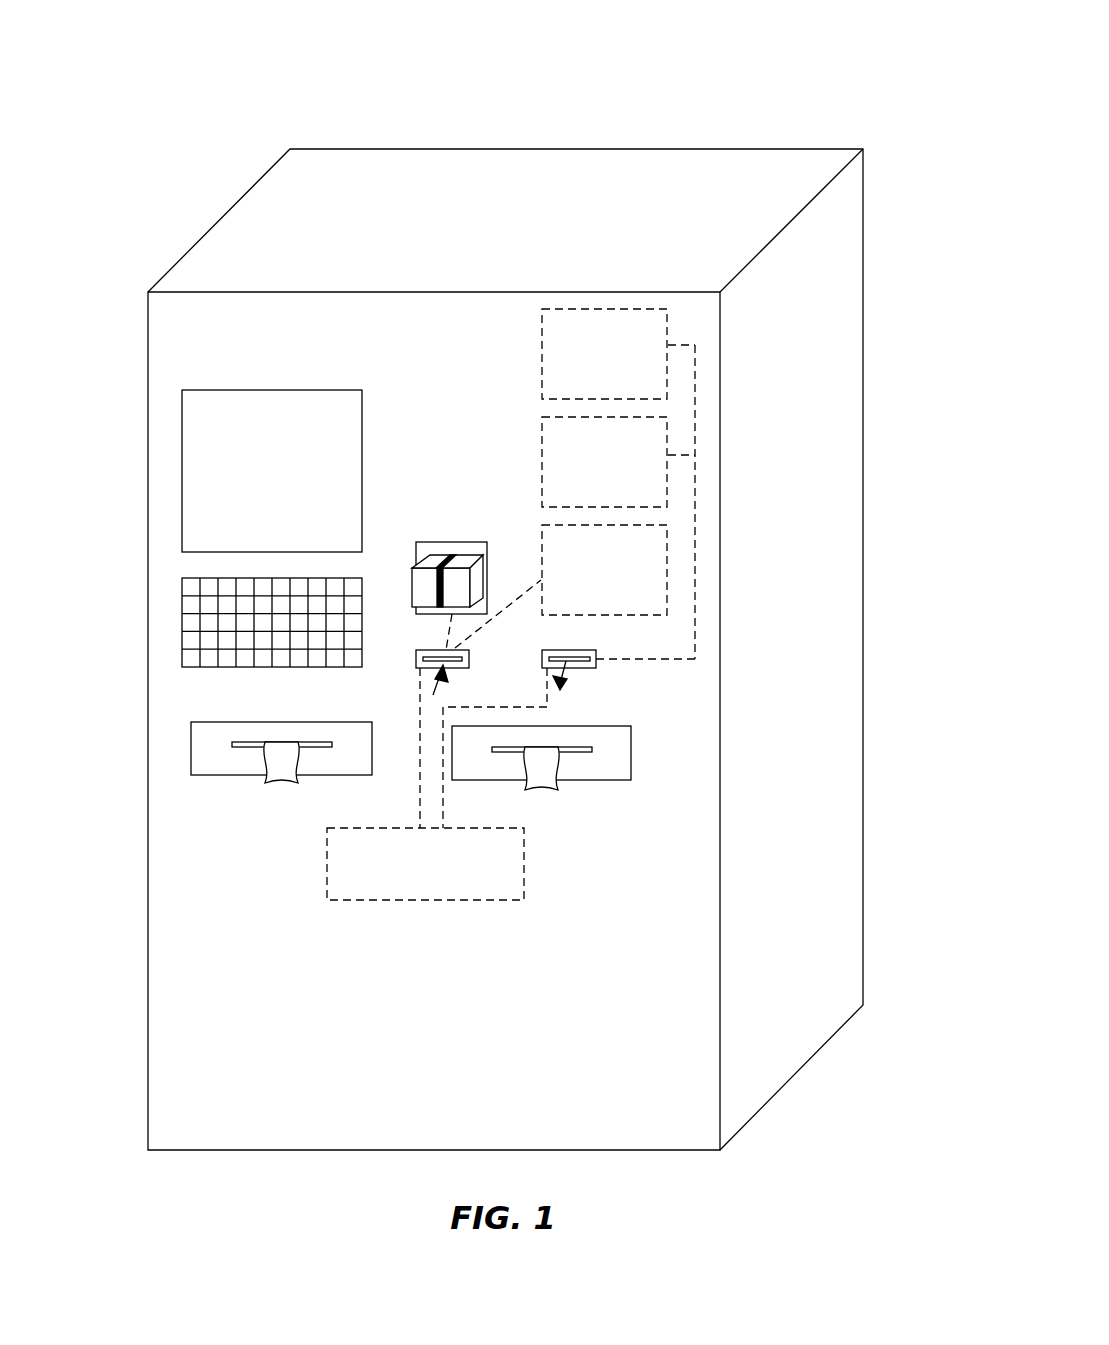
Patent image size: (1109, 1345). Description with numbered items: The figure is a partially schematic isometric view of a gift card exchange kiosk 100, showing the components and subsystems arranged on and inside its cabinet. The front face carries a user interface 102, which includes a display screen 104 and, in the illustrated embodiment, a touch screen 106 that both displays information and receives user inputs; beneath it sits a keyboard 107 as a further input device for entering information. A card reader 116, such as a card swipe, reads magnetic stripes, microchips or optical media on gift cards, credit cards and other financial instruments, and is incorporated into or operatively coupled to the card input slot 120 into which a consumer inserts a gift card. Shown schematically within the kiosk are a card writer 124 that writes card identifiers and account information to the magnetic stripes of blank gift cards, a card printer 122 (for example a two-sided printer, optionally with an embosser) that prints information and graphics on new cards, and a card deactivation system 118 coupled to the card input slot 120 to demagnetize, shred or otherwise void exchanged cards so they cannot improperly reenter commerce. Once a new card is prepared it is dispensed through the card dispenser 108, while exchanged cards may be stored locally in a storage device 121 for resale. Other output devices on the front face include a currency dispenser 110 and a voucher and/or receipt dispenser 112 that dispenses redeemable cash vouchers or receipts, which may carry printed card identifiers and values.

The gift card exchange kiosk 100 is at (808, 108).
The user interface 102 is at (155, 566).
The display screen 104 is at (182, 457).
The touch screen 106 is at (272, 471).
The keyboard 107 is at (182, 615).
The card dispenser 108 is at (596, 655).
The currency dispenser 110 is at (632, 748).
The voucher and/or receipt dispenser 112 is at (191, 741).
The card reader 116 is at (450, 542).
The card deactivation system 118 is at (667, 567).
The card input slot 120 is at (469, 660).
The storage device 121 is at (524, 865).
The card printer 122 is at (667, 462).
The card writer 124 is at (667, 352).